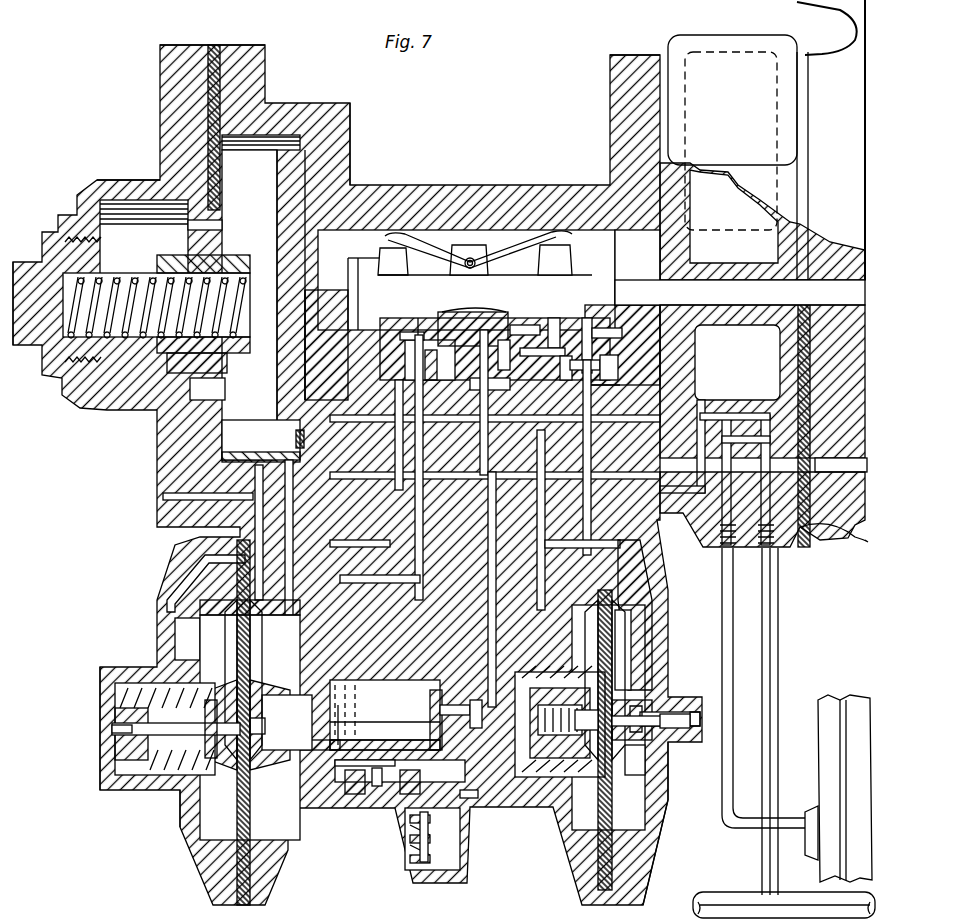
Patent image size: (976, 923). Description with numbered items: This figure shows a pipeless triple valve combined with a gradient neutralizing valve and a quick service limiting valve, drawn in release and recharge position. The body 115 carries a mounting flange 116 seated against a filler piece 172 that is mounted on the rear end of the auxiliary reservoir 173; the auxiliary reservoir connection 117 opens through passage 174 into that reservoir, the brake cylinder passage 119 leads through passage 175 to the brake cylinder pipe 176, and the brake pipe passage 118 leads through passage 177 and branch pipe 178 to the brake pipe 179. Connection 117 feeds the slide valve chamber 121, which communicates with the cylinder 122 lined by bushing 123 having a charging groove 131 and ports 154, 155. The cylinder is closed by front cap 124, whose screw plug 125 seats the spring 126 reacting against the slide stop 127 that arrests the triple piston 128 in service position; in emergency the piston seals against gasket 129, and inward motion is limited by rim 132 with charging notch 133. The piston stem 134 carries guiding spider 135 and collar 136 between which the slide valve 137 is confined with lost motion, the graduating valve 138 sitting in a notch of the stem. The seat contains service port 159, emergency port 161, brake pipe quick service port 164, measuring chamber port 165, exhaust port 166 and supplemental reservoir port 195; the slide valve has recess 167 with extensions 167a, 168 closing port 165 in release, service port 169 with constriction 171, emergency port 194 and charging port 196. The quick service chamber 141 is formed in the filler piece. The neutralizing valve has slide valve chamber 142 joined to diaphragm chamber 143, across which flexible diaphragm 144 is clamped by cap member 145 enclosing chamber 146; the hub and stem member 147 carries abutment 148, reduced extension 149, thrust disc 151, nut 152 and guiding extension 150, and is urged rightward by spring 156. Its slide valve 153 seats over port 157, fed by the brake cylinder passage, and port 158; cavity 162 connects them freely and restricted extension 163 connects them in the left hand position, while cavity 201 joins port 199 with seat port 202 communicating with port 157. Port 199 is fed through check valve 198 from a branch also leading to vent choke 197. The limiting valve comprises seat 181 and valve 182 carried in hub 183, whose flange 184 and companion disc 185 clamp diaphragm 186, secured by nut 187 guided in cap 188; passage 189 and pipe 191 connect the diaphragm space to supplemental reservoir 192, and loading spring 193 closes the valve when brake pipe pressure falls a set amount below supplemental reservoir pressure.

The body 115 is at (416, 185).
The mounting flange 116 is at (610, 103).
The auxiliary reservoir connection 117 is at (637, 267).
The brake pipe passage 118 is at (700, 390).
The brake cylinder passage 119 is at (634, 486).
The slide valve chamber 121 is at (480, 230).
The cylinder 122 is at (261, 297).
The bushing 123 is at (276, 103).
The front cap 124 is at (125, 177).
The screw plug 125 is at (36, 355).
The spring 126 is at (119, 337).
The slide stop 127 is at (233, 350).
The triple piston 128 is at (277, 298).
The gasket 129 is at (220, 186).
The charging groove 131 is at (315, 126).
The rim 132 is at (328, 386).
The charging notch 133 is at (460, 315).
The piston stem 134 is at (360, 290).
The guiding spider 135 is at (605, 288).
The collar 136 is at (372, 292).
The slide valve 137 is at (616, 368).
The graduating valve 138 is at (520, 324).
The quick service chamber 141 is at (762, 381).
The slide valve chamber 142 is at (366, 709).
The diaphragm chamber 143 is at (260, 860).
The flexible diaphragm 144 is at (210, 866).
The cap member 145 is at (104, 778).
The chamber 146 is at (180, 820).
The combined hub and stem member 147 is at (277, 730).
The abutment 148 is at (261, 725).
The reduced extension 149 is at (112, 730).
The extension 150 is at (432, 690).
The thrust disc 151 is at (175, 640).
The nut 152 is at (208, 760).
The slide valve 153 is at (424, 745).
The port 154 is at (266, 452).
The port 155 is at (260, 461).
The spring 156 is at (113, 692).
The port 157 is at (375, 786).
The port 158 is at (345, 782).
The service port 159 is at (490, 338).
The emergency port 161 is at (600, 360).
The cavity 162 is at (312, 765).
The restricted extension 163 is at (329, 725).
The brake pipe quick service port 164 is at (383, 366).
The measuring chamber port 165 is at (452, 320).
The exhaust port 166 is at (471, 389).
The recess 167 is at (426, 322).
The extension 167a is at (406, 332).
The extension 168 is at (522, 347).
The service port 169 is at (566, 356).
The constriction 171 is at (555, 318).
The filler piece 172 is at (738, 38).
The auxiliary reservoir 173 is at (812, 62).
The passage 174 is at (740, 292).
The passage 175 is at (808, 534).
The brake cylinder pipe 176 is at (841, 466).
The passage 177 is at (773, 556).
The branch pipe 178 is at (780, 642).
The brake pipe 179 is at (728, 896).
The seat 181 is at (535, 798).
The valve 182 is at (540, 773).
The hub 183 is at (633, 691).
The flange 184 is at (643, 636).
The companion disc 185 is at (646, 648).
The flexible diaphragm 186 is at (655, 850).
The nut 187 is at (660, 695).
The cap 188 is at (665, 770).
The passage 189 is at (722, 536).
The pipe 191 is at (668, 583).
The supplemental reservoir 192 is at (830, 706).
The loading spring 193 is at (654, 775).
The through port 194 is at (590, 324).
The port 195 is at (598, 380).
The supplemental reservoir charging port 196 is at (622, 333).
The restricted vent choke 197 is at (485, 798).
The check valve 198 is at (468, 850).
The port 199 is at (414, 838).
The cavity 201 is at (385, 738).
The seat port 202 is at (375, 788).